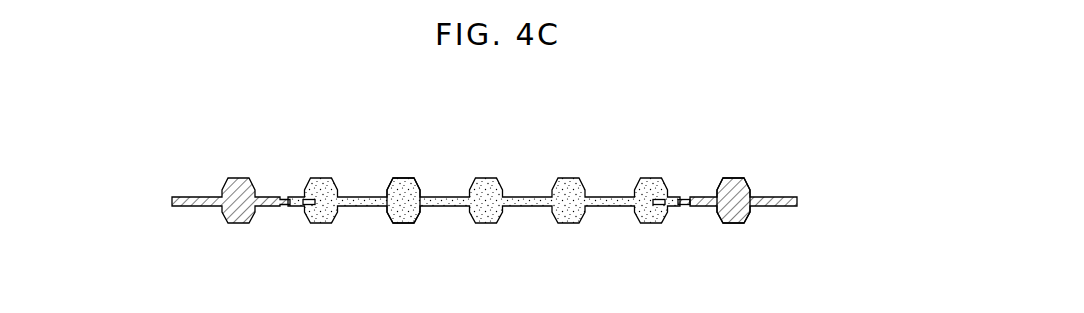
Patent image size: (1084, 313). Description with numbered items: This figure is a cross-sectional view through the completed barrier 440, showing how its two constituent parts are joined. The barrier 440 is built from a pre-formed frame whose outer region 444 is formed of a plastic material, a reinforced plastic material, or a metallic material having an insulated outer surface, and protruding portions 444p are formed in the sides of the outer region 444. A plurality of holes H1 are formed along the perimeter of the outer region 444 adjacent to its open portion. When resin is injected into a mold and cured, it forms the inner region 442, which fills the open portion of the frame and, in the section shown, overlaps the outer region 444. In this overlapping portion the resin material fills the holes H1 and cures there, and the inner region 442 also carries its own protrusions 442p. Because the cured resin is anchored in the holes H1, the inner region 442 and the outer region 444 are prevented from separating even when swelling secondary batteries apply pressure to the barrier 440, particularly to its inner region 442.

The barrier 440 is at (493, 182).
The inner region 442 is at (595, 199).
The protrusion of insulating layer 442p is at (403, 222).
The outer region 444 is at (773, 205).
The protruding portions 444p is at (728, 223).
The holes H1 is at (300, 207).